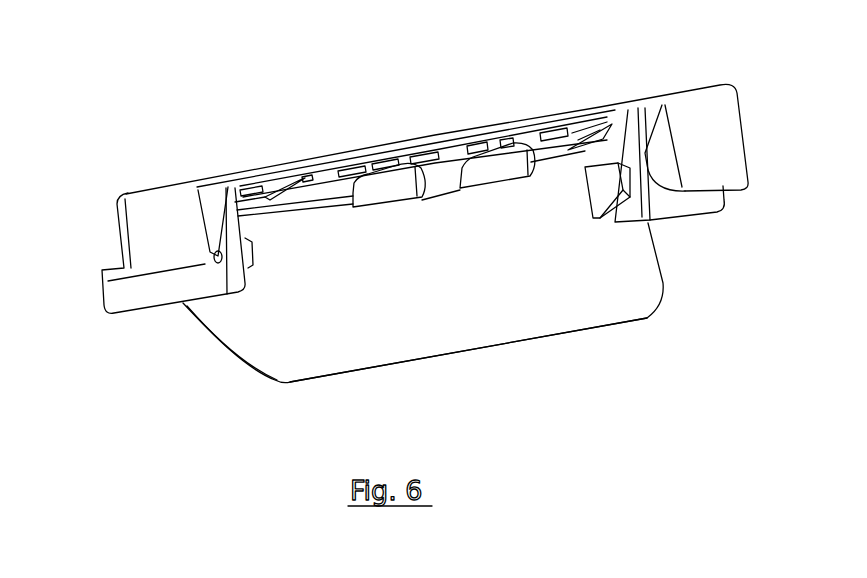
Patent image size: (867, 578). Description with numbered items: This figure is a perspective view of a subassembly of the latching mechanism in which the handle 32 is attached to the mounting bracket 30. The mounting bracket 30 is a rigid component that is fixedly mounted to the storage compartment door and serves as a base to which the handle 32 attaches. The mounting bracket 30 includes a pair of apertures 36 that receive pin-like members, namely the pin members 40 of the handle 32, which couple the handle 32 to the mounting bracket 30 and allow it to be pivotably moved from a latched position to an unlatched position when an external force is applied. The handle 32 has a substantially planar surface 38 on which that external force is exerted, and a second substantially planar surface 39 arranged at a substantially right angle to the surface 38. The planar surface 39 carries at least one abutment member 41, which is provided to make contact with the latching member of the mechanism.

The mounting bracket 30 is at (495, 130).
The handle 32 is at (498, 347).
The apertures 36 is at (215, 256).
The substantially planar surface 38 is at (603, 290).
The substantially planar surface 39 is at (567, 150).
The pin members 40 is at (215, 255).
The abutment member 41 is at (385, 187).